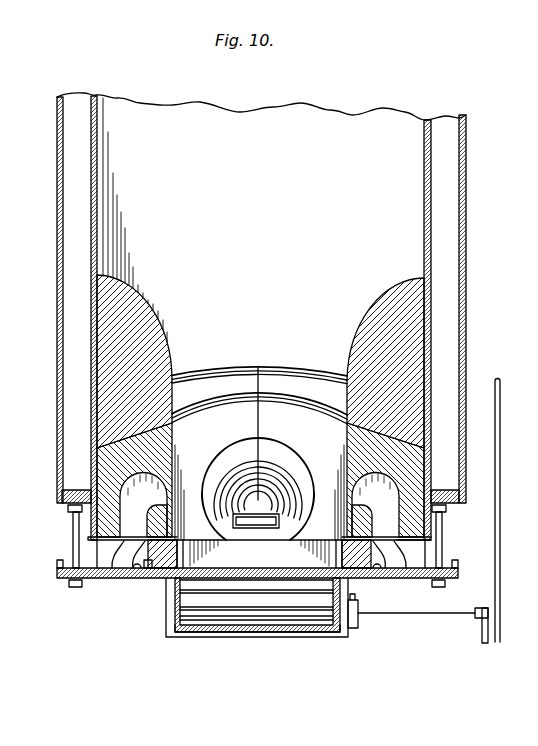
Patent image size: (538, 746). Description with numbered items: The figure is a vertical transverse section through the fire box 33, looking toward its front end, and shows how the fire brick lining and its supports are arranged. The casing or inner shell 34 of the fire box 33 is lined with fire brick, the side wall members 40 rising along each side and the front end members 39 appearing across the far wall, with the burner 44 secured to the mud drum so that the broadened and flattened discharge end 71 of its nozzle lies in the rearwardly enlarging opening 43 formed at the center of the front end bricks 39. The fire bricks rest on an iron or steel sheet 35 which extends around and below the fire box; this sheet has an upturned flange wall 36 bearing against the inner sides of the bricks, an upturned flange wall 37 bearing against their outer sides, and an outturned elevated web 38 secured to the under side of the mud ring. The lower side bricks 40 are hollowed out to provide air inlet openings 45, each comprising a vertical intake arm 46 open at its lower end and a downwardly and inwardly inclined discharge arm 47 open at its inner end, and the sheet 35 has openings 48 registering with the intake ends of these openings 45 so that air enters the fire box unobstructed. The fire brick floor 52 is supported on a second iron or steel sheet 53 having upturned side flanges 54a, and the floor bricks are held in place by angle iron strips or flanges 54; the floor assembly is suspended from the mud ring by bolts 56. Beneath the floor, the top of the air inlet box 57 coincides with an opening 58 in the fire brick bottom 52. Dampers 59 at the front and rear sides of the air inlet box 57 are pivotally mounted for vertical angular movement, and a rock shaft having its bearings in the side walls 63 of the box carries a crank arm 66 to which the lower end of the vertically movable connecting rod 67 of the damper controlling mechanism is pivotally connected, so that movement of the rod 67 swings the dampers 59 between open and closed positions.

The fire box 33 is at (467, 300).
The casing or inner shell 34 is at (432, 213).
The iron or steel sheet 35 is at (108, 540).
The upturned flange wall 36 is at (186, 538).
The upturned flange wall 37 is at (76, 532).
The outturned elevated portion or web 38 is at (60, 503).
The front end fire brick members 39 is at (300, 366).
The side wall fire brick members 40 is at (140, 303).
The rearwardly enlarging opening 43 is at (246, 447).
The burner 44 is at (265, 512).
The air inlet openings 45 is at (125, 487).
The vertical intake arm 46 is at (124, 568).
The downwardly and inwardly inclined discharge arm 47 is at (173, 478).
The openings 48 is at (97, 575).
The fire brick floor 52 is at (149, 570).
The iron or steel sheet 53 is at (400, 578).
The angle iron strips or flanges 54 is at (140, 574).
The upturned side flanges 54a is at (474, 582).
The bolts 56 is at (70, 588).
The air inlet box 57 is at (229, 640).
The opening 58 is at (259, 554).
The dampers 59 is at (262, 590).
The side walls 63 is at (176, 628).
The crank arm 66 is at (482, 636).
The connecting rod 67 is at (500, 393).
The broadened and flattened discharge end 71 is at (246, 502).